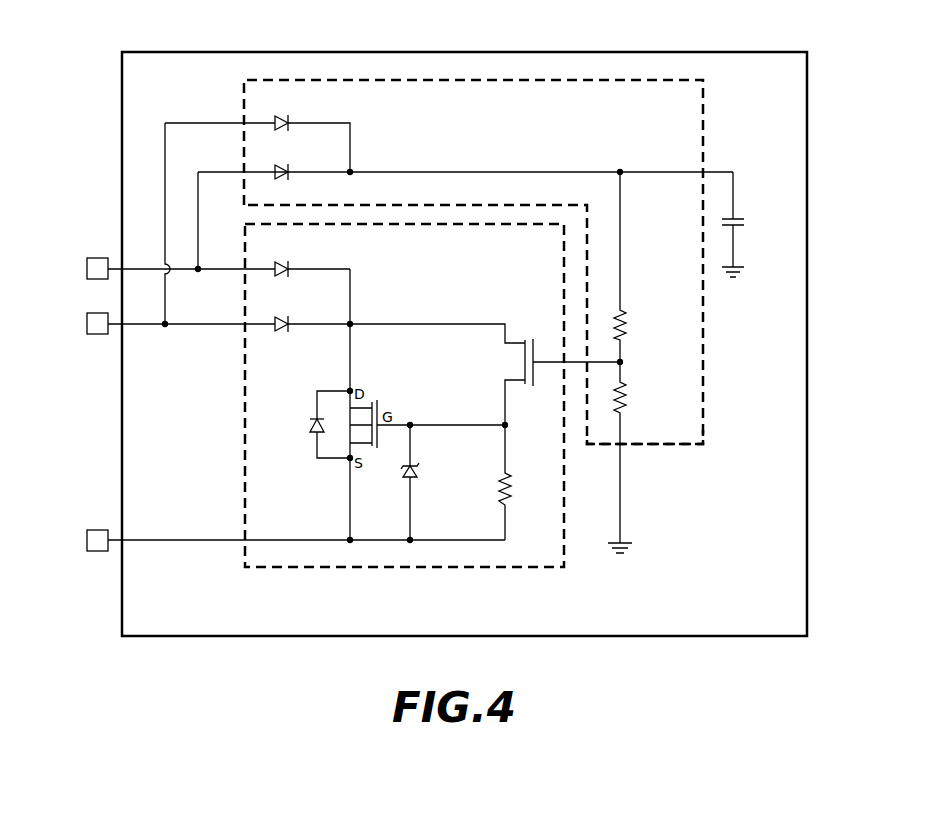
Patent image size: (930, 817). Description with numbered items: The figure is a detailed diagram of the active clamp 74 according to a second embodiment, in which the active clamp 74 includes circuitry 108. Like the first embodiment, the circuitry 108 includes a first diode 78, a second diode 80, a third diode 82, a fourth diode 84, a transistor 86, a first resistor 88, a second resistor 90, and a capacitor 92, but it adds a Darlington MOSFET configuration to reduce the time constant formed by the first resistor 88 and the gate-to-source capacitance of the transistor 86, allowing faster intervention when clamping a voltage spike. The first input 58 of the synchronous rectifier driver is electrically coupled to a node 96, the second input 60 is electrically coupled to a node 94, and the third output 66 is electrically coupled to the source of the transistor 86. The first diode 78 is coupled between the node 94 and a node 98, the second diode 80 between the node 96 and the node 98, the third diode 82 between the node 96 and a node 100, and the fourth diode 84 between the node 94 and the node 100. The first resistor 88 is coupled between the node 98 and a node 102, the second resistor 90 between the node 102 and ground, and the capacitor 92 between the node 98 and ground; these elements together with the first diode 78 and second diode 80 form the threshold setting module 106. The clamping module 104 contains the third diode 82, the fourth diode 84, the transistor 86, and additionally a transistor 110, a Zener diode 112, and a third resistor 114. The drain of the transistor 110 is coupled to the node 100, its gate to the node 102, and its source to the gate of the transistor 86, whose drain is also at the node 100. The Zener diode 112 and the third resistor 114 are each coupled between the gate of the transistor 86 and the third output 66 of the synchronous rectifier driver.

The active clamp 74 is at (169, 52).
The first input 58 is at (87, 269).
The second input 60 is at (87, 324).
The third output 66 is at (87, 540).
The first diode 78 is at (278, 116).
The second diode 80 is at (278, 167).
The third diode 82 is at (279, 262).
The fourth diode 84 is at (279, 317).
The transistor 86 is at (316, 401).
The first resistor 88 is at (629, 321).
The second resistor 90 is at (629, 406).
The capacitor 92 is at (744, 222).
The node 94 is at (164, 326).
The node 96 is at (198, 271).
The node 98 is at (351, 172).
The node 100 is at (351, 324).
The node 102 is at (622, 363).
The clamping module 104 is at (299, 569).
The threshold setting module 106 is at (666, 447).
The circuitry 108 is at (724, 137).
The transistor 110 is at (504, 361).
The Zener diode 112 is at (418, 473).
The third resistor 114 is at (500, 496).